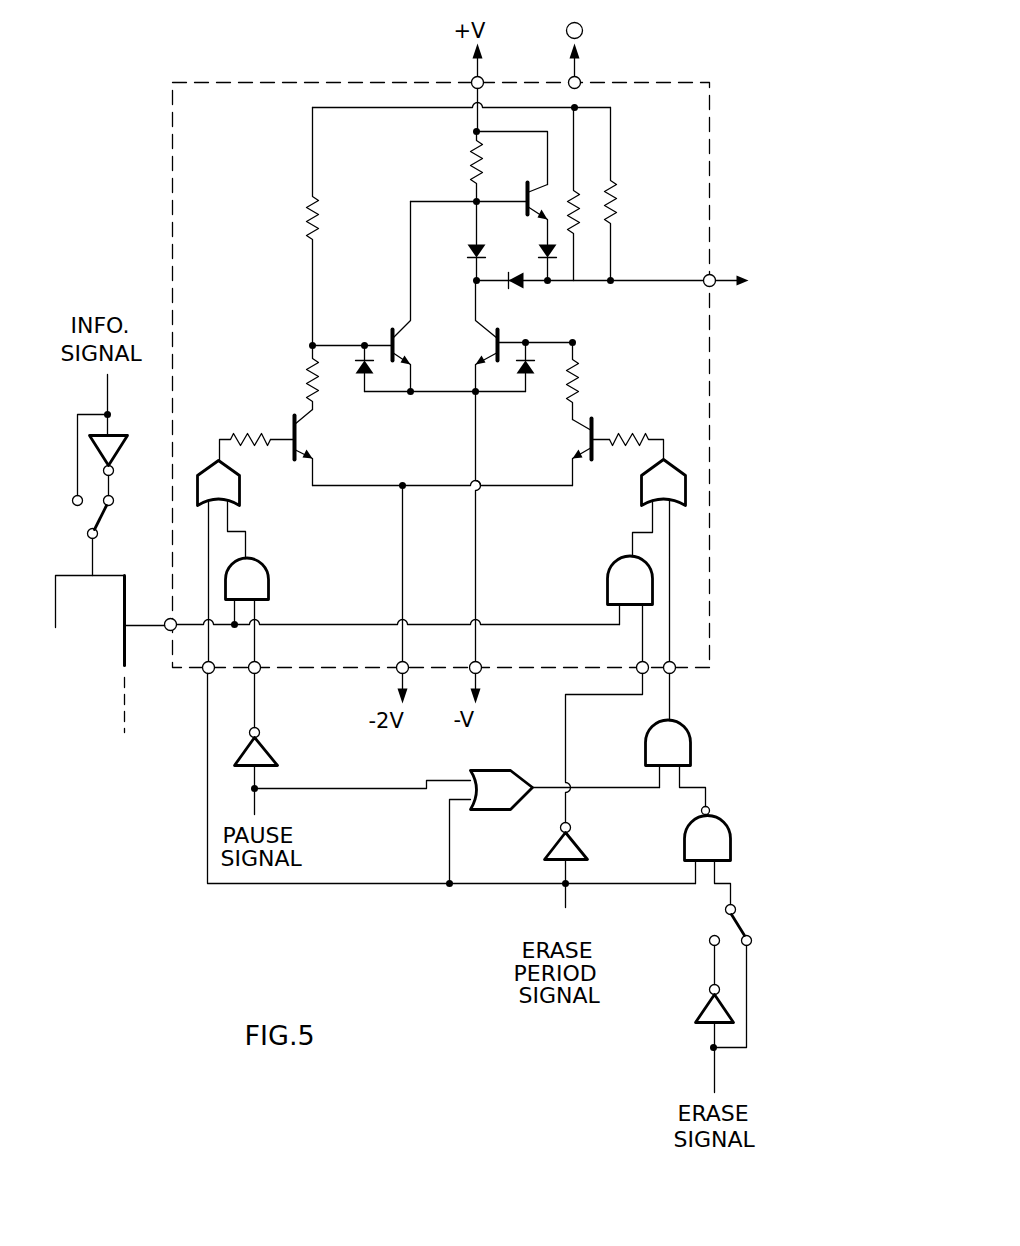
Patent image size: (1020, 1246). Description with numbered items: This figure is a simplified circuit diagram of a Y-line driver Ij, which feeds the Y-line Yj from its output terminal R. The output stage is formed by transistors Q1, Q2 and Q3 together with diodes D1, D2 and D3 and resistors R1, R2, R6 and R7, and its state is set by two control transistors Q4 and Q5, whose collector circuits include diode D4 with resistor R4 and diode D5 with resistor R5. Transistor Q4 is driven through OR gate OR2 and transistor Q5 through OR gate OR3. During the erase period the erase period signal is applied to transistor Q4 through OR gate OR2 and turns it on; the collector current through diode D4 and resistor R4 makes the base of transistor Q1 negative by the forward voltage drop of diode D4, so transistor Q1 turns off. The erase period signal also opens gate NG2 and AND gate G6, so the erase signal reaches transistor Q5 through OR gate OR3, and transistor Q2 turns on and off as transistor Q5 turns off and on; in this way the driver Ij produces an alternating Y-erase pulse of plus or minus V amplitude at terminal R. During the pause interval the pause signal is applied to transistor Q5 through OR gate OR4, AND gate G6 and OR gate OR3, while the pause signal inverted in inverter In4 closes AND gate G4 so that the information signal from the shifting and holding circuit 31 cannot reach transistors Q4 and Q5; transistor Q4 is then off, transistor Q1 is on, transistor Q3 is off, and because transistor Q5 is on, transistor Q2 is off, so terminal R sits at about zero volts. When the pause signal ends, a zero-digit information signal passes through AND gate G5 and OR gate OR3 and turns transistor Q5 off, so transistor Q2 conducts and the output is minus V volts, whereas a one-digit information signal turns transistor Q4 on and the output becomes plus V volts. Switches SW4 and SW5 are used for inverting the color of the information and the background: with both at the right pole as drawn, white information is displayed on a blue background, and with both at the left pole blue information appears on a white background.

The Y-line driver Ij is at (200, 78).
The resistor R1 is at (614, 208).
The resistor R2' R2 is at (468, 150).
The resistor R4 is at (303, 381).
The resistor R5 is at (577, 390).
The resistor R6 is at (318, 227).
The resistor R7 is at (577, 223).
The transistor Q1 is at (420, 320).
The transistor Q2 is at (492, 346).
The transistor Q3 is at (527, 143).
The transistor Q4 is at (305, 448).
The transistor Q5 is at (582, 437).
The diode D1' D1 is at (465, 243).
The diode D2' D2 is at (543, 246).
The diode D3' D3 is at (531, 289).
The diode D4 is at (357, 374).
The diode D5 is at (525, 378).
The OR gate OR2 is at (222, 561).
The OR gate OR3 is at (659, 561).
The OR gate OR4 is at (565, 790).
The AND gate G4 is at (247, 610).
The AND gate G5 is at (630, 609).
The AND gate G6 is at (676, 740).
The AND gate NG2 is at (708, 856).
The inverter In4 is at (258, 750).
The switch SW4 is at (749, 925).
The switch SW5 is at (113, 520).
The shifting and holding circuit 31 is at (100, 623).
The output terminal R is at (712, 274).
The output line Yj is at (746, 288).